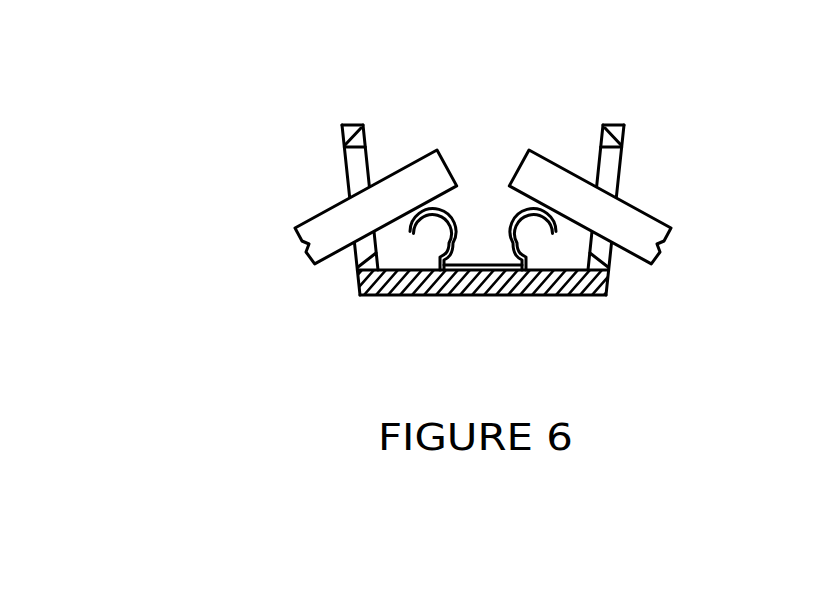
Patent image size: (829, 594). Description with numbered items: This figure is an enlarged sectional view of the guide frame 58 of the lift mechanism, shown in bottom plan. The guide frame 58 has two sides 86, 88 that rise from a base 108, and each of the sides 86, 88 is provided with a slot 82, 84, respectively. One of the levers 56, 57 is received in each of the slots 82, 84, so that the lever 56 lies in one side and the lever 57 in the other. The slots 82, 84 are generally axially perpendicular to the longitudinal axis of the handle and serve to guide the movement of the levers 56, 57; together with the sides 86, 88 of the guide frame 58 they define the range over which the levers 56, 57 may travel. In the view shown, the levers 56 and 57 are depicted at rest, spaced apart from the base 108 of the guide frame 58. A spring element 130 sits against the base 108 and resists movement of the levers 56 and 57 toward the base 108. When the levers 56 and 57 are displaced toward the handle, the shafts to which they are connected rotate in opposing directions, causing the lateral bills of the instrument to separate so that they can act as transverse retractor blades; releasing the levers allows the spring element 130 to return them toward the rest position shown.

The lever 56 is at (590, 151).
The lever 57 is at (376, 142).
The guide frame 58 is at (433, 319).
The slot 82 is at (665, 209).
The slot 84 is at (295, 207).
The side 86 is at (650, 113).
The side 88 is at (315, 110).
The base 108 is at (515, 322).
The spring element 130 is at (514, 135).